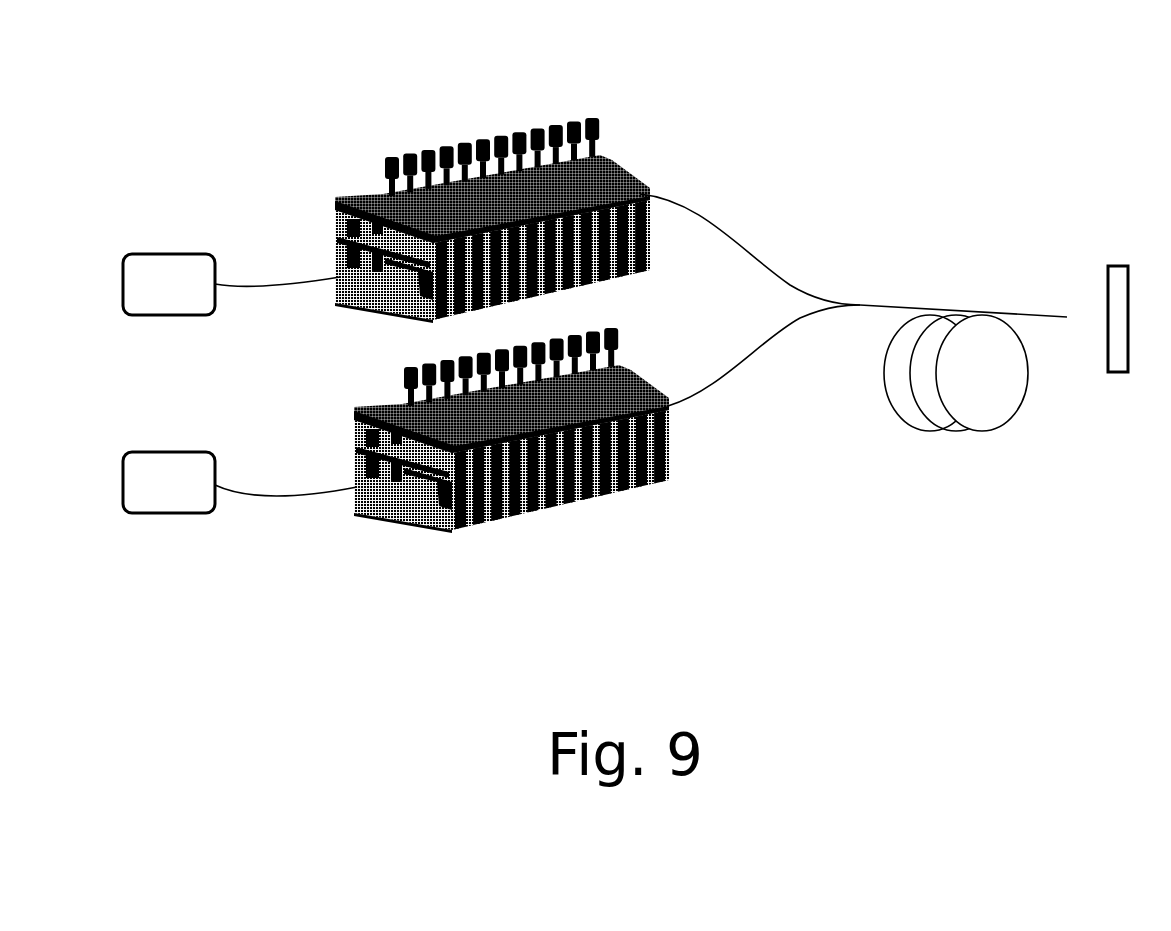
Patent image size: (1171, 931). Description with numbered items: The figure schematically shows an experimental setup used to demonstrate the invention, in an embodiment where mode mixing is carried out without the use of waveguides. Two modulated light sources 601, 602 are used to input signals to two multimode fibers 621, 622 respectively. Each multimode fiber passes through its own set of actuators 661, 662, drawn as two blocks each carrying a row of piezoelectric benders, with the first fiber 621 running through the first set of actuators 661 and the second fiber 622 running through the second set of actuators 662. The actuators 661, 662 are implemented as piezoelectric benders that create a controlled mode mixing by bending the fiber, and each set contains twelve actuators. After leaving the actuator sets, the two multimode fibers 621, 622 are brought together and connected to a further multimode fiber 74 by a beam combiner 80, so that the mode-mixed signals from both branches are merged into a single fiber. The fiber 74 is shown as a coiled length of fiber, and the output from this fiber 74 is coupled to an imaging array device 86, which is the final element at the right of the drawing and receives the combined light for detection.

The modulated light source 601 is at (171, 252).
The multimode fiber (MMF) 621 is at (267, 283).
The set of actuators 661 is at (661, 110).
The modulated light source 602 is at (170, 452).
The multimode fiber (MMF) 622 is at (292, 497).
The set of actuators 662 is at (661, 341).
The beam combiner 80 is at (858, 302).
The multimode fiber (MMF) 74 is at (888, 307).
The imaging array device 86 is at (1120, 265).